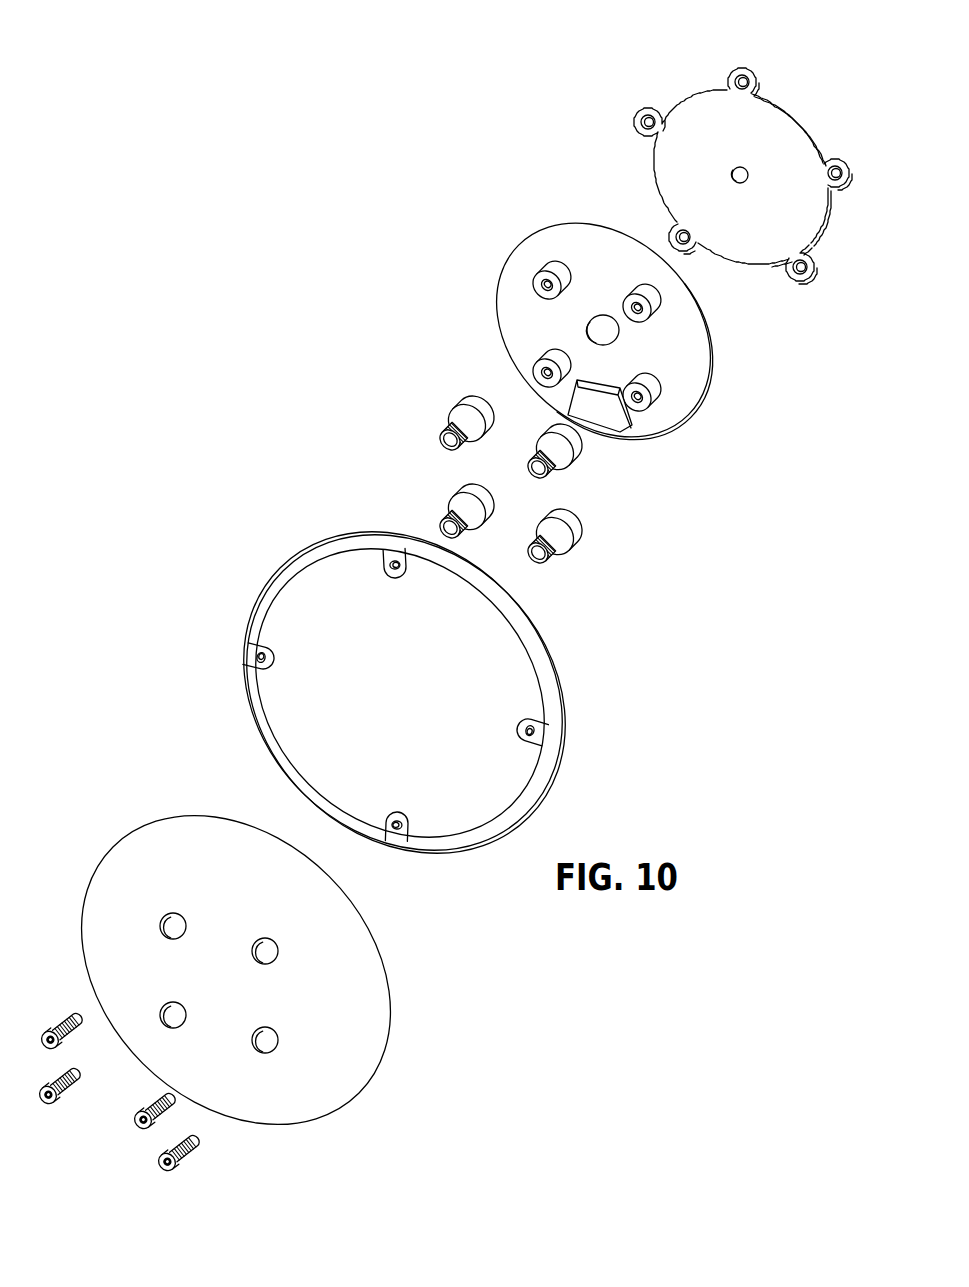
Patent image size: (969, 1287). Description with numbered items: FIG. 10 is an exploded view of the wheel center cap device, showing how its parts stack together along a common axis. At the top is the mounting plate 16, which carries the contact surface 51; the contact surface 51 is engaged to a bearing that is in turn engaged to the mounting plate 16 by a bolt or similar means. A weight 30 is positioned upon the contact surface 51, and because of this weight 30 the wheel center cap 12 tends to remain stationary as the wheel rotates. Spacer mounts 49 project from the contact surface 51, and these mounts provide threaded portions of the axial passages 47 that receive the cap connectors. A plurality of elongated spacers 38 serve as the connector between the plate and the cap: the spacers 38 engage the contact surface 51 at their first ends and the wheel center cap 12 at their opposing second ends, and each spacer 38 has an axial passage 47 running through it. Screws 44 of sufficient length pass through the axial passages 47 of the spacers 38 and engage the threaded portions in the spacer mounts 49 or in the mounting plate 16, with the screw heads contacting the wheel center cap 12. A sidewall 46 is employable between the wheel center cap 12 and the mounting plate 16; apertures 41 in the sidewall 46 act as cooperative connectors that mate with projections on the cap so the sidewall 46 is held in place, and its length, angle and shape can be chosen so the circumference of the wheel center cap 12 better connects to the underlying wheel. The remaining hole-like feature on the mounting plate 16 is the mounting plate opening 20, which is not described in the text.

The wheel center cap 12 is at (175, 842).
The mounting plate 16 is at (695, 100).
The gasket mounting hole 20 is at (648, 123).
The weight 30 is at (608, 407).
The spacer 38 is at (577, 540).
The aperture 41 is at (392, 568).
The screw 44 is at (65, 1018).
The sidewall 46 is at (318, 545).
The axial passage 47 is at (442, 447).
The spacer mount 49 is at (658, 393).
The contact surface 51 is at (548, 240).